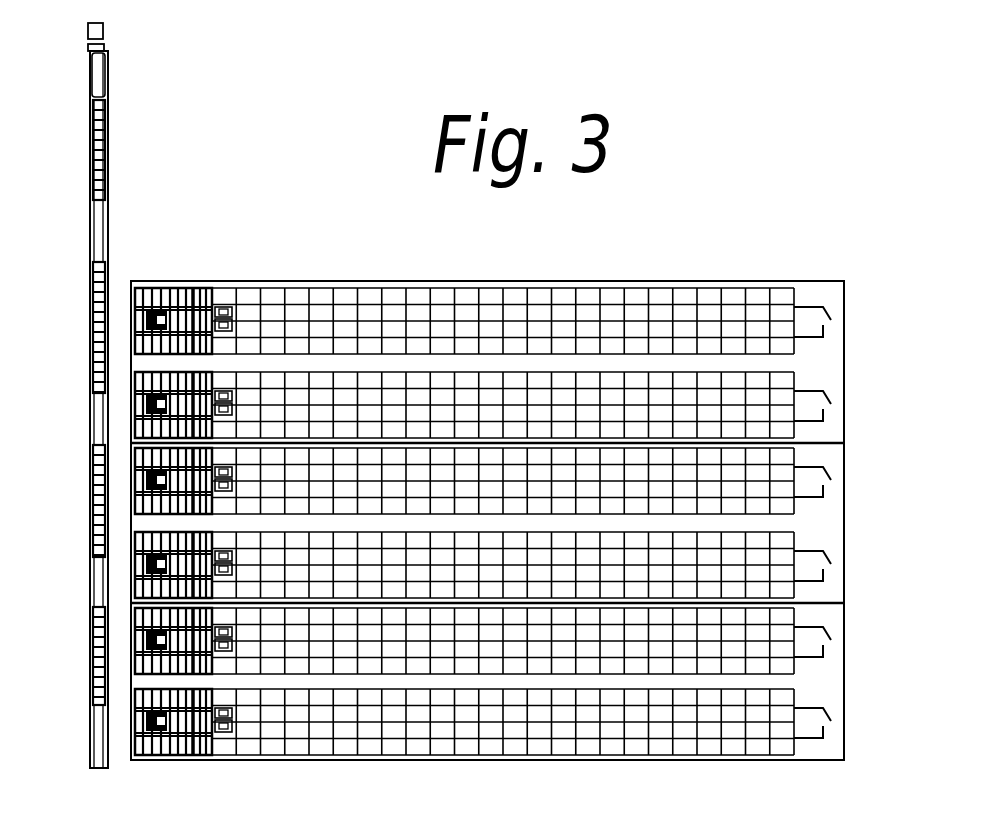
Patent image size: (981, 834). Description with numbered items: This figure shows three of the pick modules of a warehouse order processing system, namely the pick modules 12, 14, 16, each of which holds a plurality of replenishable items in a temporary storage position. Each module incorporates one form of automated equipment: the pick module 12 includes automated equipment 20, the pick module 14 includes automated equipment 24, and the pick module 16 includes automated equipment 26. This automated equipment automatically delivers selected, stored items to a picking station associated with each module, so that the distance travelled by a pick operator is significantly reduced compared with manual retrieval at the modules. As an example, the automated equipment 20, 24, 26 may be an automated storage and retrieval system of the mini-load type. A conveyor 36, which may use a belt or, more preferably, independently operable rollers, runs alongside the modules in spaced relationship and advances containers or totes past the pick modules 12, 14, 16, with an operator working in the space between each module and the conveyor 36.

The pick module 12 is at (527, 482).
The pick module 14 is at (527, 495).
The pick module 16 is at (527, 654).
The automated equipment 20 is at (750, 369).
The automated equipment 24 is at (750, 544).
The automated equipment 26 is at (750, 702).
The conveyor 36 is at (89, 707).